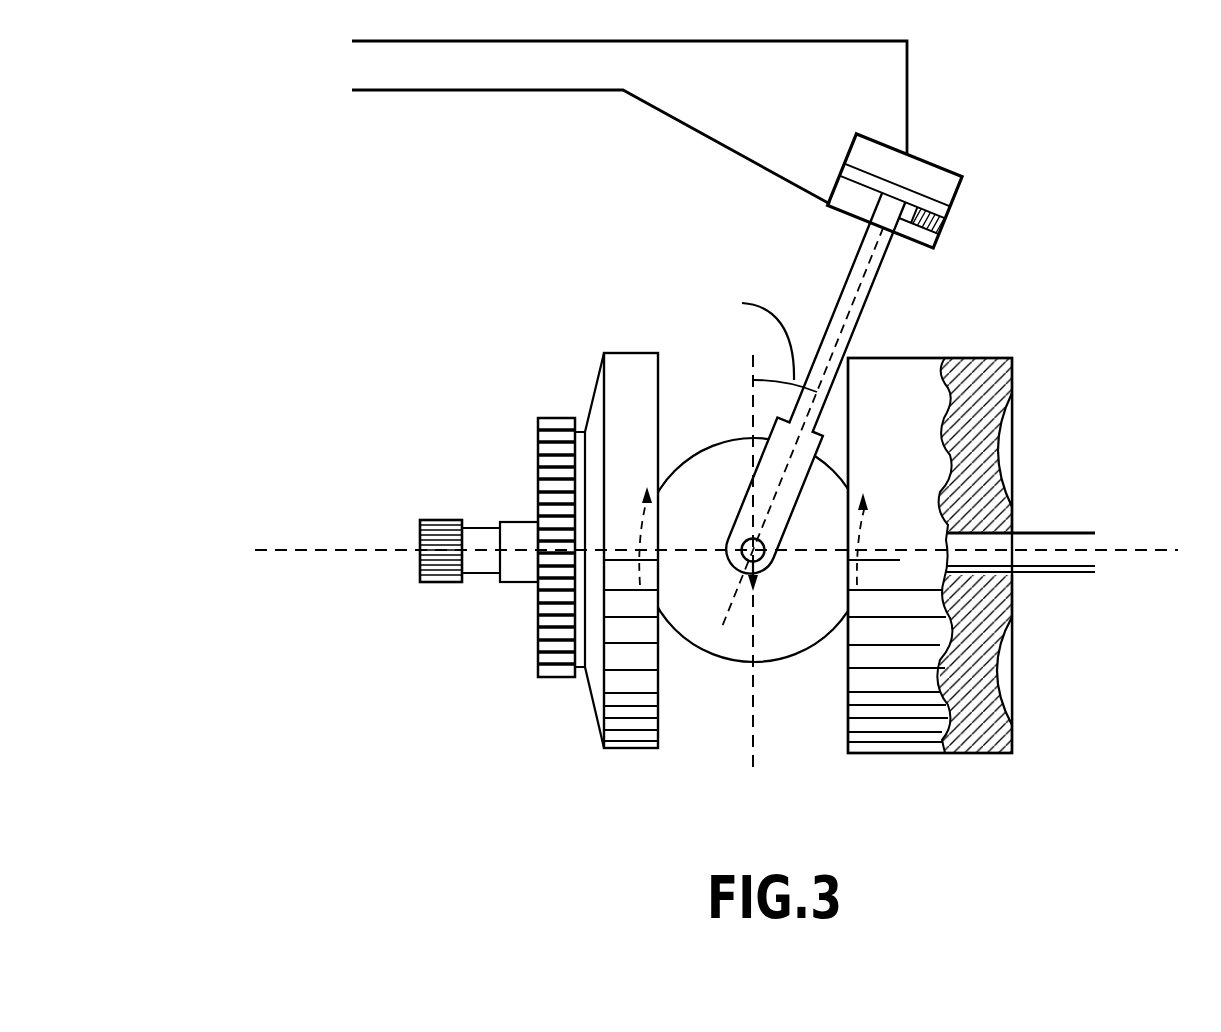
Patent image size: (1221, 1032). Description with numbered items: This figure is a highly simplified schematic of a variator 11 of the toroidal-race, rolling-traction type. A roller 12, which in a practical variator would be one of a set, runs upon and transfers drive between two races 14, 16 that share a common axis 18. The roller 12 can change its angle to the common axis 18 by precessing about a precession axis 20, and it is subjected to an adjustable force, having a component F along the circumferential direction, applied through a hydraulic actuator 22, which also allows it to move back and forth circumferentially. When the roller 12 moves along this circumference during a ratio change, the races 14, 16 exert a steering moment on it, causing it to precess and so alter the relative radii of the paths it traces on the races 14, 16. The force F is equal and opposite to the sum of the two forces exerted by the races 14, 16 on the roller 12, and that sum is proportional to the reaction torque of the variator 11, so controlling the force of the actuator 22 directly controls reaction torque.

The variator 11 is at (731, 438).
The roller 12 is at (806, 649).
The race 14 is at (633, 735).
The race 16 is at (925, 753).
The common axis 18 is at (1135, 551).
The precession axis 20 is at (853, 318).
The hydraulic actuator 22 is at (960, 215).